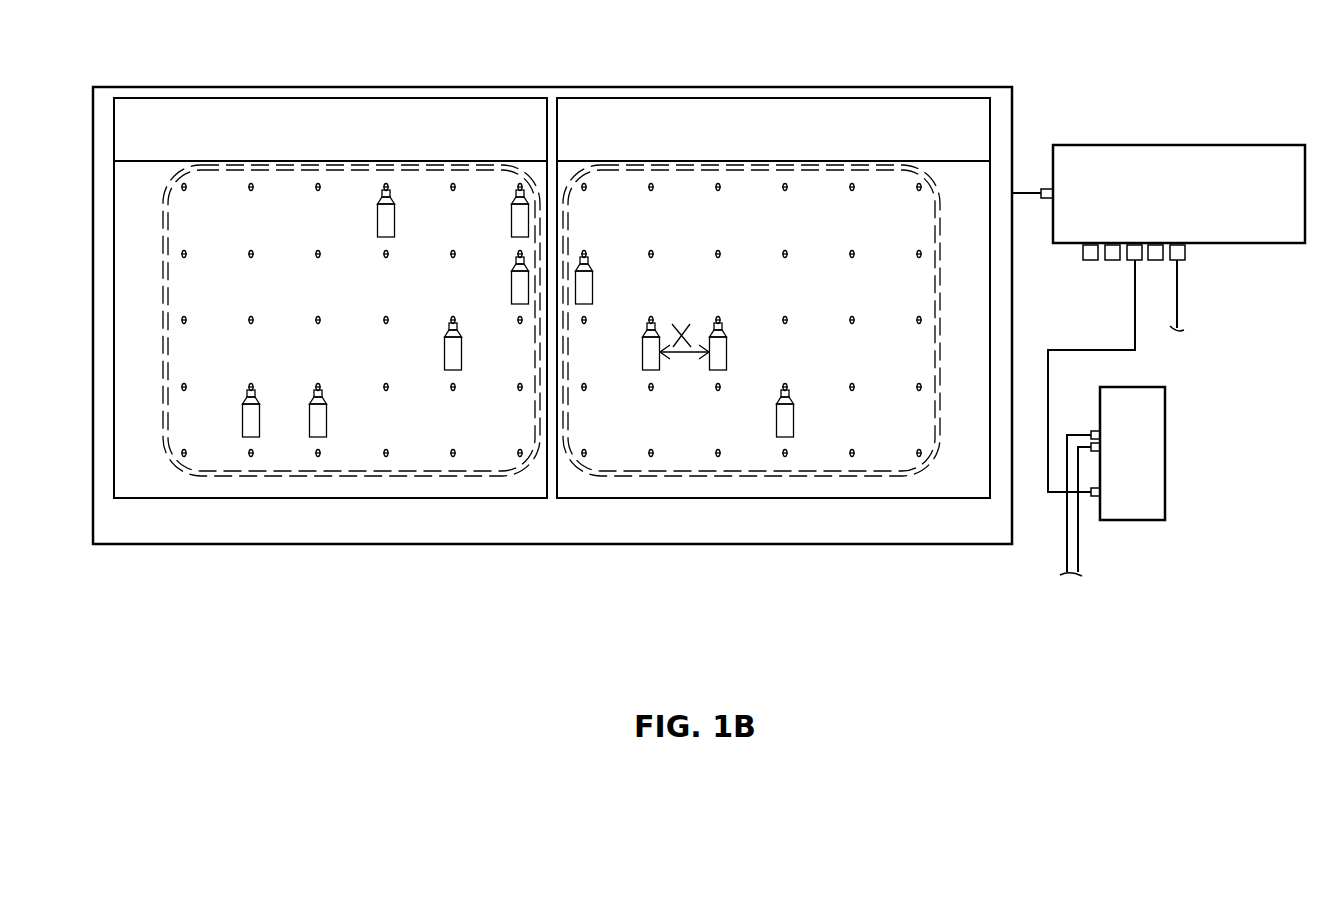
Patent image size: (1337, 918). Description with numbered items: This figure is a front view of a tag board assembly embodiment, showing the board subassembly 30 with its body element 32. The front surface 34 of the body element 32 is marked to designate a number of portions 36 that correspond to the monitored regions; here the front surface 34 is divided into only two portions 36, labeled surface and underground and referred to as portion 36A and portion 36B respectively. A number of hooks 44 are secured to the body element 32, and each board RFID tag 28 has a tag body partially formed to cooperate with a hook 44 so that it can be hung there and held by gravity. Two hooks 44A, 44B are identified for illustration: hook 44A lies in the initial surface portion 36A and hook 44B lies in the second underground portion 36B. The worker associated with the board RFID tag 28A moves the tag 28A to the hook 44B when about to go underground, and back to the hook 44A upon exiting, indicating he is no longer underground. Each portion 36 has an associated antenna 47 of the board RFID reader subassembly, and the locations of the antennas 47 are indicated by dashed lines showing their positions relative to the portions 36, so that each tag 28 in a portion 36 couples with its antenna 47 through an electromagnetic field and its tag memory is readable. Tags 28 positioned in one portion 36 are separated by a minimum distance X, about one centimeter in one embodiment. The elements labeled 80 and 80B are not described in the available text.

The board subassembly 30 is at (943, 75).
The body element 32 is at (417, 86).
The front surface 34 is at (551, 320).
The portions 36 is at (485, 385).
The surface portion 36A is at (432, 458).
The underground portion 36B is at (677, 458).
The hooks 44 is at (551, 320).
The hook in surface portion 44A is at (383, 187).
The hook in underground portion 44B is at (722, 256).
The board RFID tag 28 is at (793, 420).
The board RFID tag 28A is at (392, 222).
The antennas 47 is at (223, 476).
The display panel 80 is at (138, 500).
The panel header 80B is at (165, 162).